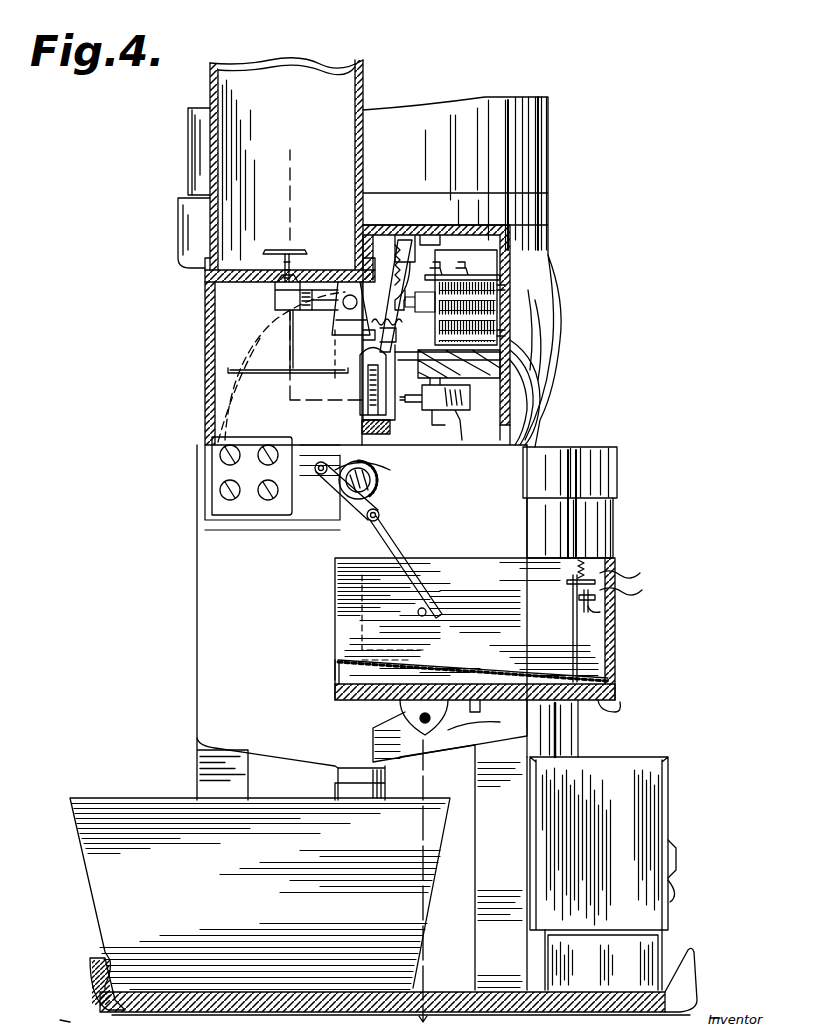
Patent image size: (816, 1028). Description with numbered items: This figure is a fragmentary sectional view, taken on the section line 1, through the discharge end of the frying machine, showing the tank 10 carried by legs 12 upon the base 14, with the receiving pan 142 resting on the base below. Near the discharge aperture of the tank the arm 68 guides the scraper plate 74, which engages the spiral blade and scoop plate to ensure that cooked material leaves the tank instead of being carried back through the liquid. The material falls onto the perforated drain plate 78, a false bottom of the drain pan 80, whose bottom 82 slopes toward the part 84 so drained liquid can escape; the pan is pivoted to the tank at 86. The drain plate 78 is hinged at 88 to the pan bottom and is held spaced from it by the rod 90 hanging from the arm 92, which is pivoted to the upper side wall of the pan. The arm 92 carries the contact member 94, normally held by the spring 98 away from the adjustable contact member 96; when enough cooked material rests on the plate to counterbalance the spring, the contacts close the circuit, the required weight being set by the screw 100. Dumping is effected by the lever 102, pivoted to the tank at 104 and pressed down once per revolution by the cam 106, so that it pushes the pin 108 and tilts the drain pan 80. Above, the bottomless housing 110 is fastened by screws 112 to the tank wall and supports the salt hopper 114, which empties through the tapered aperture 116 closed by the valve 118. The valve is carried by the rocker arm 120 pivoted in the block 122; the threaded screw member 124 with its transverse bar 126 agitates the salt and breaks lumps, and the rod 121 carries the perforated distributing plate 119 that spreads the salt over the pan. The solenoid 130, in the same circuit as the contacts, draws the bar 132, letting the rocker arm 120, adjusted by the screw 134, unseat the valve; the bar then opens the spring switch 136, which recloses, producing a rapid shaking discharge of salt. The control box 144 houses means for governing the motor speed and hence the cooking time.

The section line 1 is at (282, 185).
The tank 10 is at (197, 640).
The legs 12 is at (480, 848).
The base 14 is at (432, 970).
The arm 68 is at (390, 432).
The scraper plate 74 is at (386, 410).
The perforated drain plate 78 is at (498, 678).
The drain pan 80 is at (615, 655).
The bottom 82 is at (458, 682).
The part 84 is at (622, 706).
The pivot 86 is at (432, 718).
The hinge 88 is at (333, 684).
The rod 90 is at (572, 620).
The arm 92 is at (612, 565).
The contact member 94 is at (567, 582).
The adjustable contact member 96 is at (581, 596).
The spring 98 is at (575, 570).
The screw 100 is at (625, 612).
The lever 102 is at (395, 565).
The pivot 104 is at (320, 475).
The cam 106 is at (378, 495).
The pin 108 is at (422, 616).
The bottomless housing 110 is at (205, 294).
The screws 112 is at (265, 500).
The hopper 114 is at (205, 138).
The aperture 116 is at (345, 264).
The valve 118 is at (275, 297).
The perforated distributing plate 119 is at (272, 374).
The rocker arm 120 is at (335, 335).
The rod 121 is at (300, 345).
The block 122 is at (395, 296).
The threaded screw member 124 is at (280, 262).
The transversely extending bar 126 is at (297, 250).
The solenoid 130 is at (528, 287).
The bar 132 is at (391, 275).
The screw 134 is at (382, 325).
The spring switch 136 is at (445, 408).
The bin 142 is at (110, 800).
The control box 144 is at (656, 775).